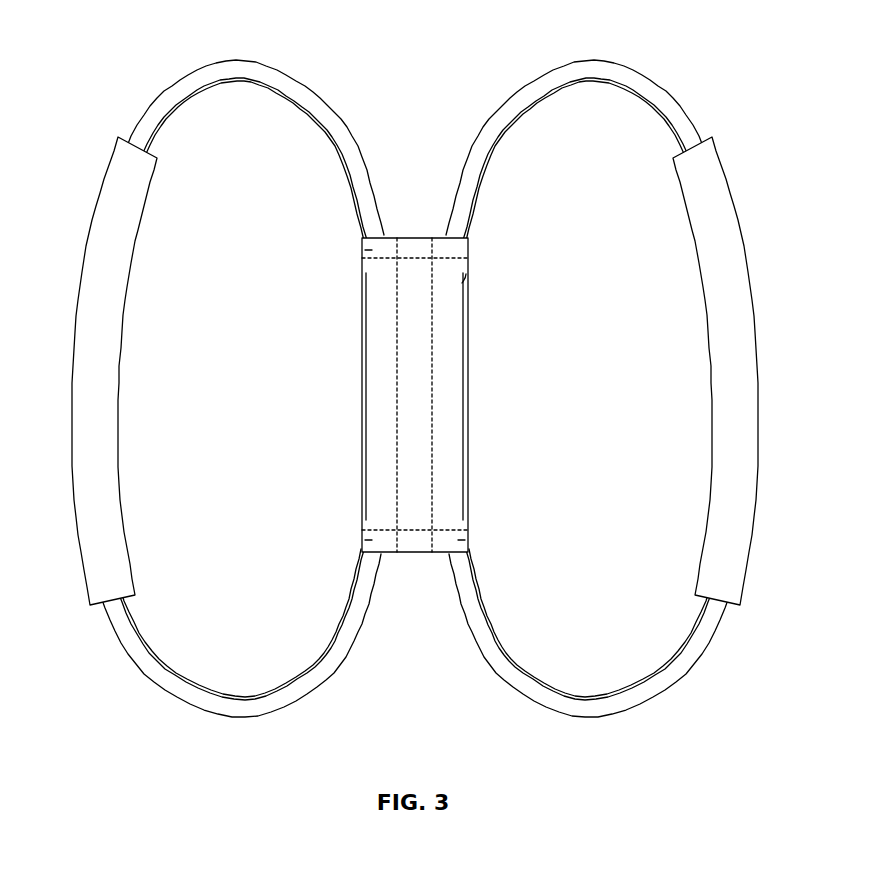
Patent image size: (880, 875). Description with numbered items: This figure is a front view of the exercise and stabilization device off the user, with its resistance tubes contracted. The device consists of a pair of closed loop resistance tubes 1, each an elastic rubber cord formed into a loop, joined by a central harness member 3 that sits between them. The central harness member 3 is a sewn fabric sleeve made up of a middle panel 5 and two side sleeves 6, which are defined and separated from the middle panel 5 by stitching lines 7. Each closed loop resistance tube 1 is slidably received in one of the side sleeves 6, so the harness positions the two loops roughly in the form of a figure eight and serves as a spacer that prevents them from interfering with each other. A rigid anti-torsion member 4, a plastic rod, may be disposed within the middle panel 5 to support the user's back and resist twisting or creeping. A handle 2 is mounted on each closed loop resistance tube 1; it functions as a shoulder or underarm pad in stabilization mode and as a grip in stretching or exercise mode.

The closed loop resistance tube 1 is at (246, 58).
The handle 2 is at (88, 187).
The central harness member 3 is at (427, 209).
The anti-torsion member 4 is at (415, 234).
The middle panel 5 is at (420, 322).
The side sleeve 6 is at (372, 553).
The stitching line 7 is at (395, 368).